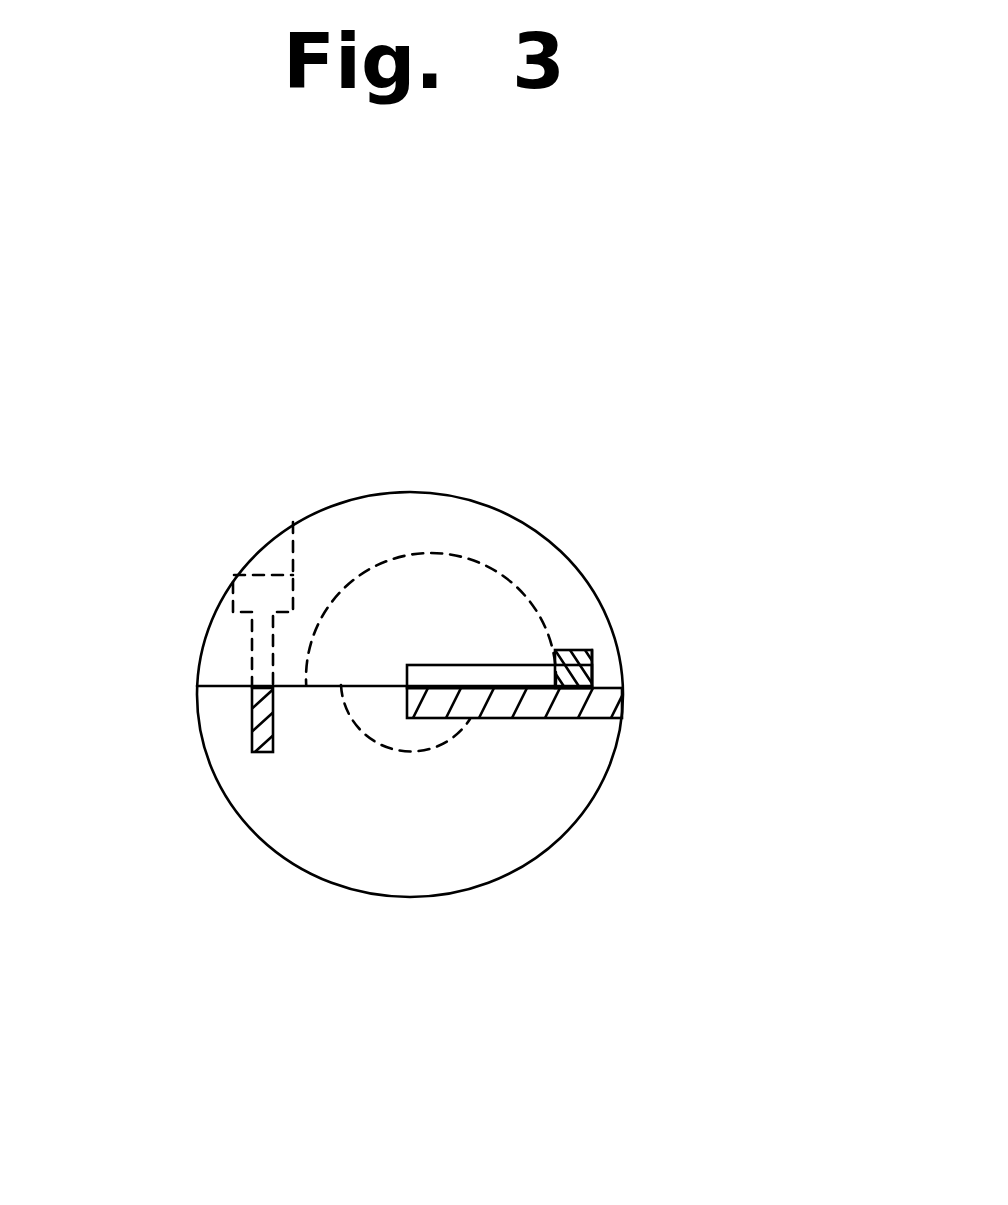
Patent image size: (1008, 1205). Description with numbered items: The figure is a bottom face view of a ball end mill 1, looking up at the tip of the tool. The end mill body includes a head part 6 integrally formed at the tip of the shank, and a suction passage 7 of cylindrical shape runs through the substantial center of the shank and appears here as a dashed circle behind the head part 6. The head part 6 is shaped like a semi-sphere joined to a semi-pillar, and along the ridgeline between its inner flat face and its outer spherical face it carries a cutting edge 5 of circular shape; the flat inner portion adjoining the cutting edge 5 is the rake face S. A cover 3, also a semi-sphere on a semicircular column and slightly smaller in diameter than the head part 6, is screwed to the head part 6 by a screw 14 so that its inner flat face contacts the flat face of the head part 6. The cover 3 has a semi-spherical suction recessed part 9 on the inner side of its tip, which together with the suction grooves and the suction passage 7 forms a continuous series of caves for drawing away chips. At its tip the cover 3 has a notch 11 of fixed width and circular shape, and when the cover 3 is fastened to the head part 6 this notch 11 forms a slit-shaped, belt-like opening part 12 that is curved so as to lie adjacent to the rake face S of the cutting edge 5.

The ball end mill 1 is at (712, 532).
The cover 3 is at (365, 492).
The cutting edge 5 is at (520, 710).
The head part 6 is at (430, 897).
The suction passage 7 is at (387, 750).
The suction recessed part 9 is at (458, 556).
The notch 11 is at (453, 665).
The opening part 12 is at (492, 665).
The rake face S is at (592, 651).
The screw 14 is at (250, 568).